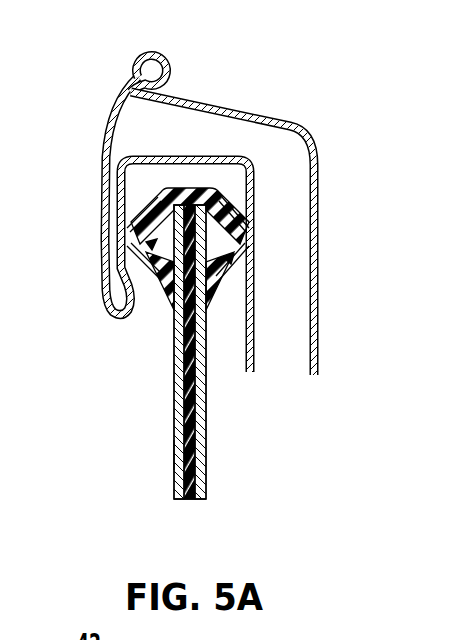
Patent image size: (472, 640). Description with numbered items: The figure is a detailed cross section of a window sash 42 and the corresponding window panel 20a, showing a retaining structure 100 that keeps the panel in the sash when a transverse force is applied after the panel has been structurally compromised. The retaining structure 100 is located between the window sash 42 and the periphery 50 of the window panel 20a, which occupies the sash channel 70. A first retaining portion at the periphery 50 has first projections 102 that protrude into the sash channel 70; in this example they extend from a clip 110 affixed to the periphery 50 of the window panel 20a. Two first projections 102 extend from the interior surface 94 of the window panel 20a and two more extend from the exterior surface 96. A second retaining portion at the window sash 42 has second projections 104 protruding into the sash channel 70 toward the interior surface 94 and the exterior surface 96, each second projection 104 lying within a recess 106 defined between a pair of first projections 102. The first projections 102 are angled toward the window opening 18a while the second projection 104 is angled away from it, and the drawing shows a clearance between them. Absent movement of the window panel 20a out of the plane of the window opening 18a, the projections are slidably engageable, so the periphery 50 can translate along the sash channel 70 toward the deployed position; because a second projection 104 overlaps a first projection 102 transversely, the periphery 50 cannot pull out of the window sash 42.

The window sash 42 is at (143, 52).
The sash channel 70 is at (148, 180).
The retaining structure 100 is at (190, 188).
The clip 110 is at (236, 188).
The first projections 102 is at (120, 214).
The second projection 104 is at (150, 245).
The recess 106 is at (158, 286).
The periphery 50 is at (255, 312).
The window opening 18a is at (198, 430).
The interior surface 94 is at (207, 450).
The window panel 20a is at (157, 492).
The exterior surface 96 is at (178, 448).